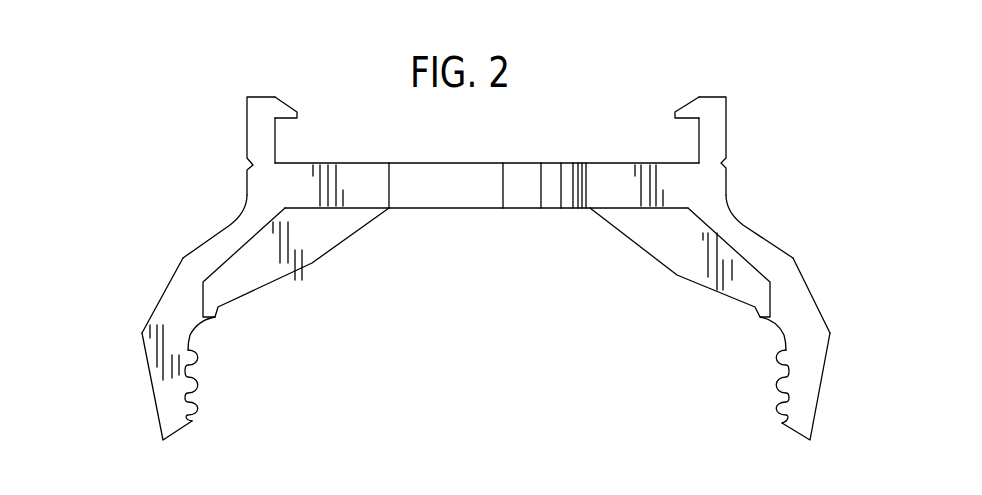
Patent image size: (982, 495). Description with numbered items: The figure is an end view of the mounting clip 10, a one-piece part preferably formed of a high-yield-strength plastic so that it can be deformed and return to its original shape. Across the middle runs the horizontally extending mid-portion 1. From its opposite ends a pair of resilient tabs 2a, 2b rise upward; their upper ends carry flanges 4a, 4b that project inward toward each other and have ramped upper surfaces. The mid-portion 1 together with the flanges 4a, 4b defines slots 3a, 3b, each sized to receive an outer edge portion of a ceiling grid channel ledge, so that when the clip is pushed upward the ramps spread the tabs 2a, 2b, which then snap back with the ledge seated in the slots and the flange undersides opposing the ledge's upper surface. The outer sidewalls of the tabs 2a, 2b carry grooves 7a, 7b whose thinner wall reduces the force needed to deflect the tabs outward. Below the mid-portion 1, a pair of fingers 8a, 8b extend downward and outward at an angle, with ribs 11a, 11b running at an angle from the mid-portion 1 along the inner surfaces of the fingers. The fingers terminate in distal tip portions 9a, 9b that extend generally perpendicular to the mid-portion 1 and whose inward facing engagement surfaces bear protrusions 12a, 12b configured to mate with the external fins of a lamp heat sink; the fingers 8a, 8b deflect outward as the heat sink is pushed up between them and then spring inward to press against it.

The mid-portion 1 is at (443, 198).
The mounting clip 10 is at (150, 101).
The resilient tab 2a is at (246, 124).
The resilient tab 2b is at (727, 103).
The slot 3a is at (282, 140).
The slot 3b is at (690, 135).
The flange 4a is at (277, 108).
The flange 4b is at (678, 112).
The groove 7a is at (246, 160).
The groove 7b is at (726, 162).
The finger 8a is at (183, 258).
The finger 8b is at (793, 258).
The distal tip portion 9a is at (167, 390).
The distal tip portion 9b is at (805, 395).
The rib 11a is at (312, 263).
The rib 11b is at (677, 275).
The protrusions 12a is at (200, 419).
The protrusions 12b is at (773, 377).